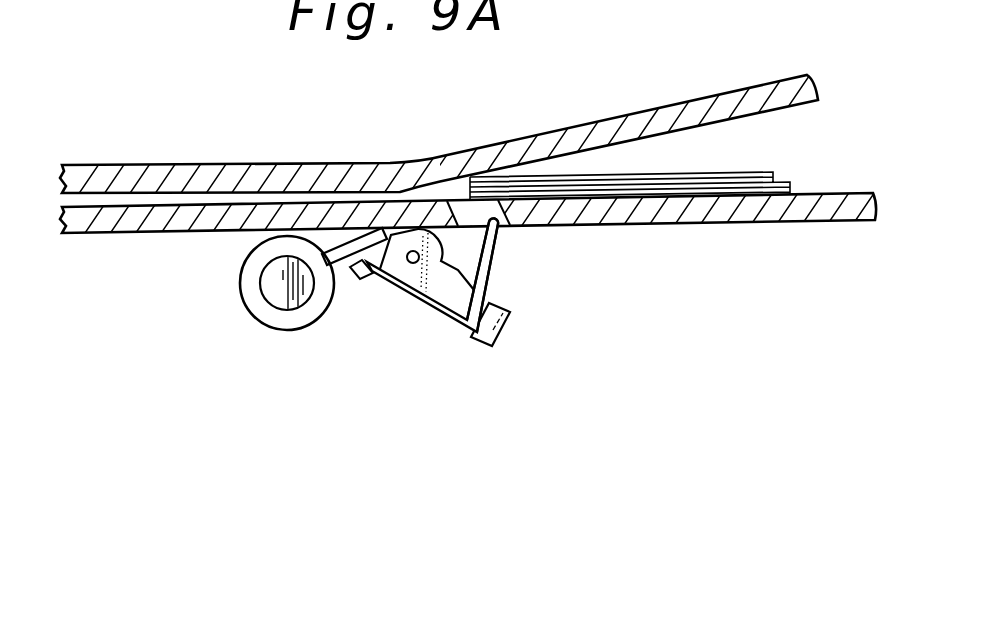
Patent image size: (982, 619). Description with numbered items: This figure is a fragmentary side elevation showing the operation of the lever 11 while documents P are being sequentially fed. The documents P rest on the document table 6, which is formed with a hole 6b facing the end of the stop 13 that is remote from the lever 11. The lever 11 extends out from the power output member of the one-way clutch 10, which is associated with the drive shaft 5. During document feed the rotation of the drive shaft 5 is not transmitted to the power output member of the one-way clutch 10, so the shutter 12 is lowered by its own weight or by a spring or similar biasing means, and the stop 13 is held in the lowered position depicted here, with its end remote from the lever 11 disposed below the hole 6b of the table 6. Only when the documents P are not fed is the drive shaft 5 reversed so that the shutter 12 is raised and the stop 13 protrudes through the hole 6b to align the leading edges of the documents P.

The drive shaft 5 is at (243, 268).
The document table 6 is at (795, 210).
The hole 6b is at (505, 241).
The one-way clutch 10 is at (275, 333).
The lever 11 is at (338, 258).
The shutter 12 is at (457, 300).
The stop 13 is at (487, 287).
The documents P is at (750, 173).